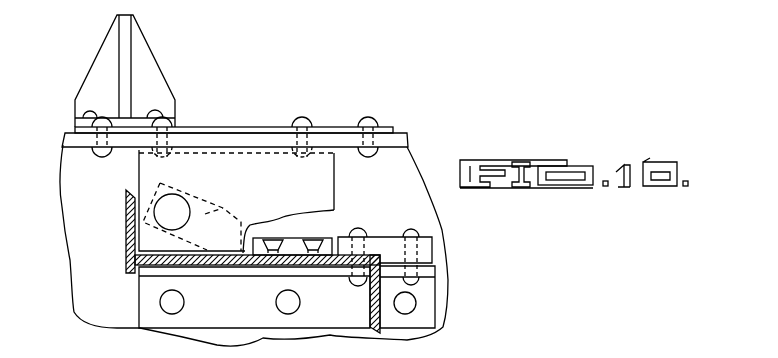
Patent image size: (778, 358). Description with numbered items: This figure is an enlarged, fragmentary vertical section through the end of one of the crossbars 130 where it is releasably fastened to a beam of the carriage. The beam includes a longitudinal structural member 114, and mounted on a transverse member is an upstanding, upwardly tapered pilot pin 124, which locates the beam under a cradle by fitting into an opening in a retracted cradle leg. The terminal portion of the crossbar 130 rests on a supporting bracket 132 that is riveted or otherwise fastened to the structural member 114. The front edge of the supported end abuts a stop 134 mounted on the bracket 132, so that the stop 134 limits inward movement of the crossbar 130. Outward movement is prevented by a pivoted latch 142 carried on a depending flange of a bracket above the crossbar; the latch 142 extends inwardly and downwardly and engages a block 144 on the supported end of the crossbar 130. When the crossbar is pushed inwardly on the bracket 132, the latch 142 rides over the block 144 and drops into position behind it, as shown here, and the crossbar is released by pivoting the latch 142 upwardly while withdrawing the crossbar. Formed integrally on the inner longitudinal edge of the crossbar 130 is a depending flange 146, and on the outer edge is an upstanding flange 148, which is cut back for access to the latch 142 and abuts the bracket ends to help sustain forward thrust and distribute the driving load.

The longitudinal structural member 114 is at (72, 237).
The pilot pin 124 is at (143, 66).
The crossbar 130 is at (312, 253).
The supporting bracket 132 is at (153, 315).
The stop 134 is at (420, 247).
The pivoted latch 142 is at (228, 207).
The block 144 is at (289, 246).
The depending flange 146 is at (388, 317).
The upstanding flange 148 is at (125, 252).